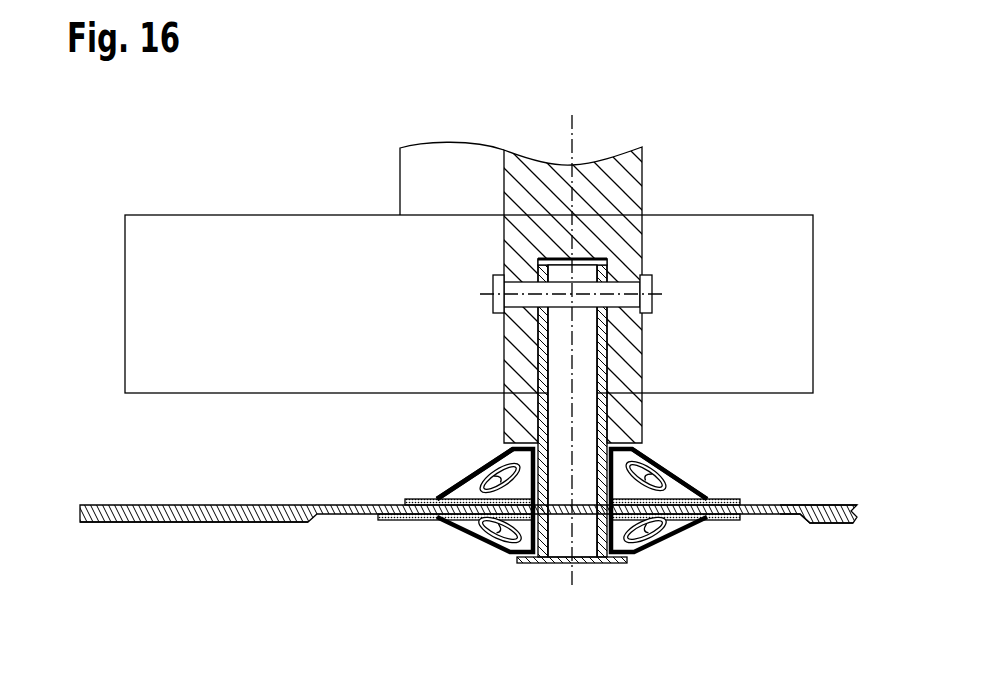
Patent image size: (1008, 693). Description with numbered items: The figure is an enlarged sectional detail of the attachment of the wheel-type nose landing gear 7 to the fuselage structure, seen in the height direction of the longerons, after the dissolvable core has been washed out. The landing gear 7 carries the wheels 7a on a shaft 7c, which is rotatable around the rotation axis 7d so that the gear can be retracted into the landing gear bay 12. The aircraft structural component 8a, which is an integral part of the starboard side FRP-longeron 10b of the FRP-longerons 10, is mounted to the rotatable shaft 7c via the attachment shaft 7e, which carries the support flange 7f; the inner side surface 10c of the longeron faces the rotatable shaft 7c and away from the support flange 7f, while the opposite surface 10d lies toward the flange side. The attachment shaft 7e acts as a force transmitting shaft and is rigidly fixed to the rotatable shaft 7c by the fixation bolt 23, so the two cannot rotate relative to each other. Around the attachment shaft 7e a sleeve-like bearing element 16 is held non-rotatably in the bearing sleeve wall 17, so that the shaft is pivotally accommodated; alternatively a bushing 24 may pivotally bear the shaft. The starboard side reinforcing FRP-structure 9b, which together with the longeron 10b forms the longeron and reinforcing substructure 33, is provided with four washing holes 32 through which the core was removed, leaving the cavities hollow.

The wheel-type nose landing gear 7 is at (177, 175).
The wheel 7a is at (140, 308).
The rotatable shaft 7c is at (628, 190).
The rotation axis 7d is at (580, 118).
The attachment shaft 7e is at (716, 455).
The support flange 7f is at (528, 563).
The aircraft structural component 8a is at (682, 460).
The starboard side reinforcing FRP-structure 9b is at (440, 487).
The FRP-longeron 10 is at (160, 530).
The starboard side FRP-longeron 10b is at (242, 525).
The inner side surface 10c is at (790, 500).
The plate lower step 10d is at (783, 520).
The landing gear bay 12 is at (350, 180).
The bearing element 16 is at (603, 517).
The bearing sleeve wall 17 is at (550, 488).
The fixation bolt 23 is at (622, 290).
The bushing 24 is at (612, 558).
The opening 32 is at (490, 467).
The longeron and reinforcing substructure 33 is at (467, 465).